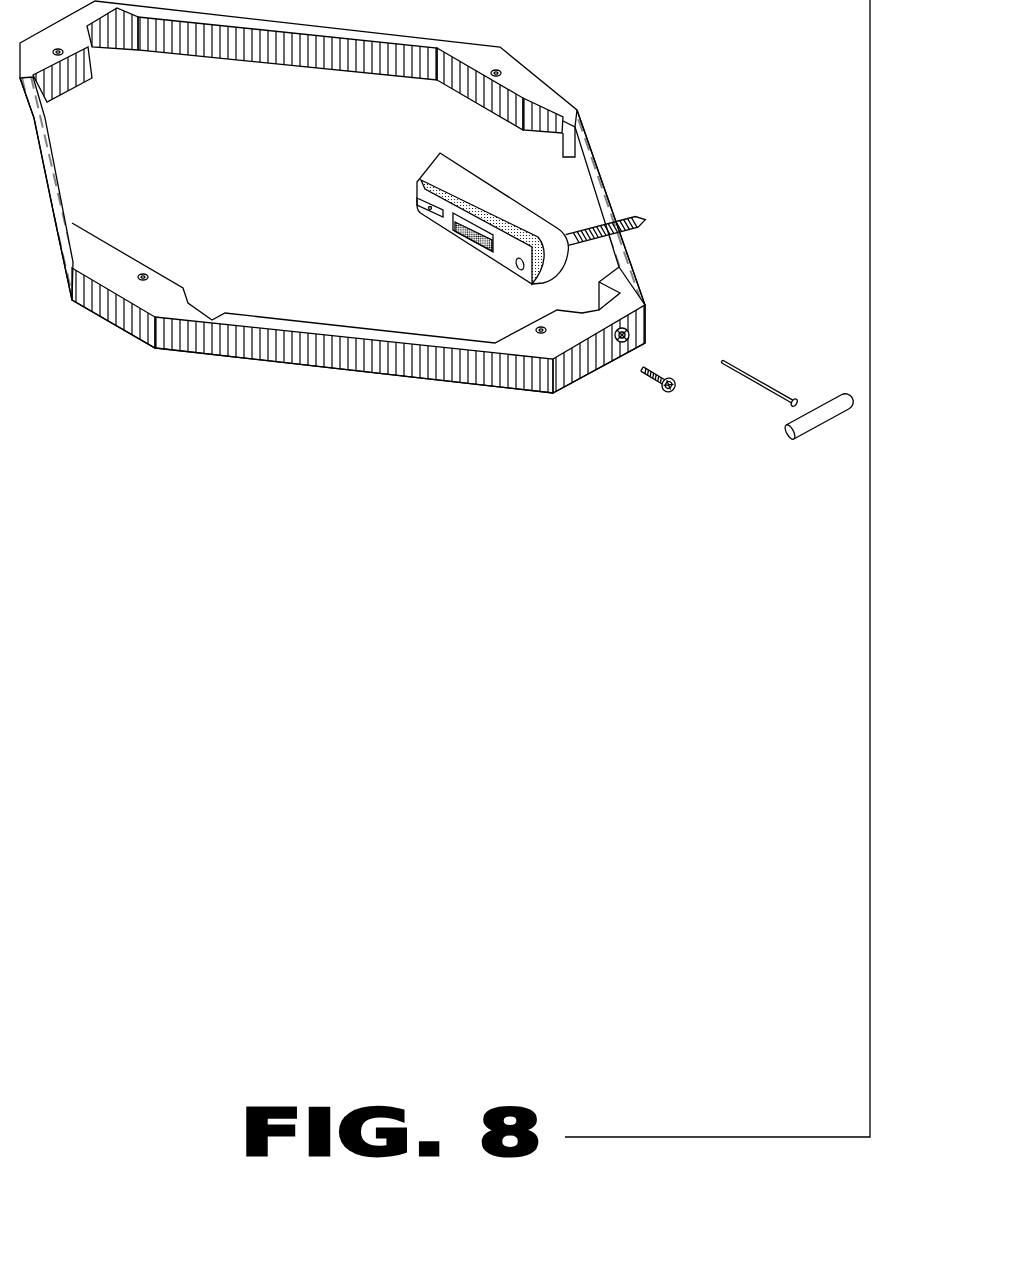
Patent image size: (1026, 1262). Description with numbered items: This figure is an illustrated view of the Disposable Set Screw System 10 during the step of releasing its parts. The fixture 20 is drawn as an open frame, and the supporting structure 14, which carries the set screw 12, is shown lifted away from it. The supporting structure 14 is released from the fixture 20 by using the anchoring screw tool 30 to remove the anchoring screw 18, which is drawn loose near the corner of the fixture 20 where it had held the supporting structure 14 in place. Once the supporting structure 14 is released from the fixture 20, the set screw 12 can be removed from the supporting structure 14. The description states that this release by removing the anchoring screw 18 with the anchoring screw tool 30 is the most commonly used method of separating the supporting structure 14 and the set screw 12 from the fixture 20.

The Disposable Set Screw System 10 is at (652, 128).
The set screw 12 is at (646, 220).
The supporting structure 14 is at (420, 180).
The anchoring screw 18 is at (640, 381).
The fixture 20 is at (283, 360).
The anchoring screw tool 30 is at (783, 435).